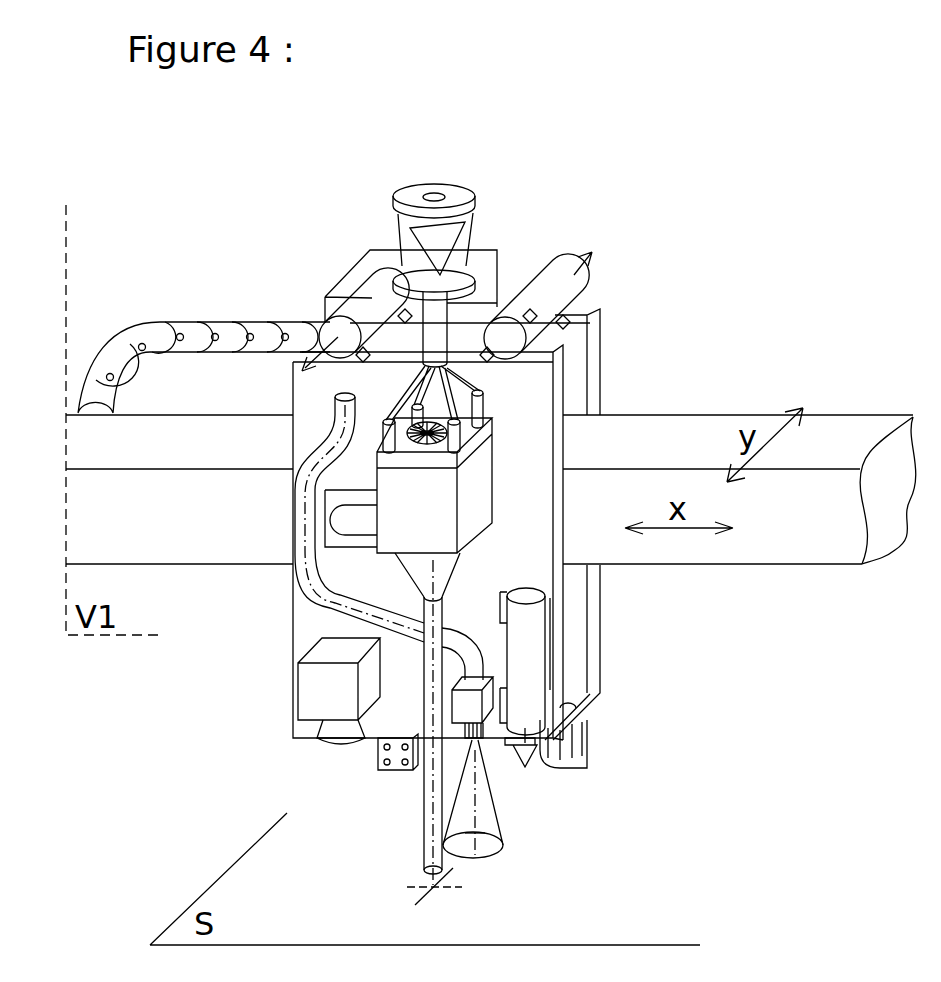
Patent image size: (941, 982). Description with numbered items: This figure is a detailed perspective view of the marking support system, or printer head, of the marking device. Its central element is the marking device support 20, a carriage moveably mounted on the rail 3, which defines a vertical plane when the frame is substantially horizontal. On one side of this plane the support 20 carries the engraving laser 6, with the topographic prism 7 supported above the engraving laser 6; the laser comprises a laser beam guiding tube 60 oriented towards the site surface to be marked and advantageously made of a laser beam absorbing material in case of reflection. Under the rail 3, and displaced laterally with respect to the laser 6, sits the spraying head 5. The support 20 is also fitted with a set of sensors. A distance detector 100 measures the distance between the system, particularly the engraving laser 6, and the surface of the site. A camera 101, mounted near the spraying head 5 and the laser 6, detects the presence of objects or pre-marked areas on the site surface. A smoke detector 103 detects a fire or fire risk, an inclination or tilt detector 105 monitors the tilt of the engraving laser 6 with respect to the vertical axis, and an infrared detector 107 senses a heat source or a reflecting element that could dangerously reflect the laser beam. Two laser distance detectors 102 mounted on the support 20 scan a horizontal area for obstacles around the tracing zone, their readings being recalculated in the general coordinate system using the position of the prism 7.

The rail 3 is at (823, 515).
The spraying head 5 is at (475, 735).
The engraving laser 6 is at (473, 492).
The topographic prism 7 is at (473, 247).
The marking device support 20 is at (297, 352).
The laser beam guiding tube 60 is at (440, 607).
The distance detector 100 is at (527, 660).
The camera 101 is at (328, 692).
The laser distance detector 102 is at (368, 273).
The smoke detector 103 is at (395, 768).
The inclination or tilt detector 105 is at (360, 520).
The infrared detector 107 is at (575, 760).